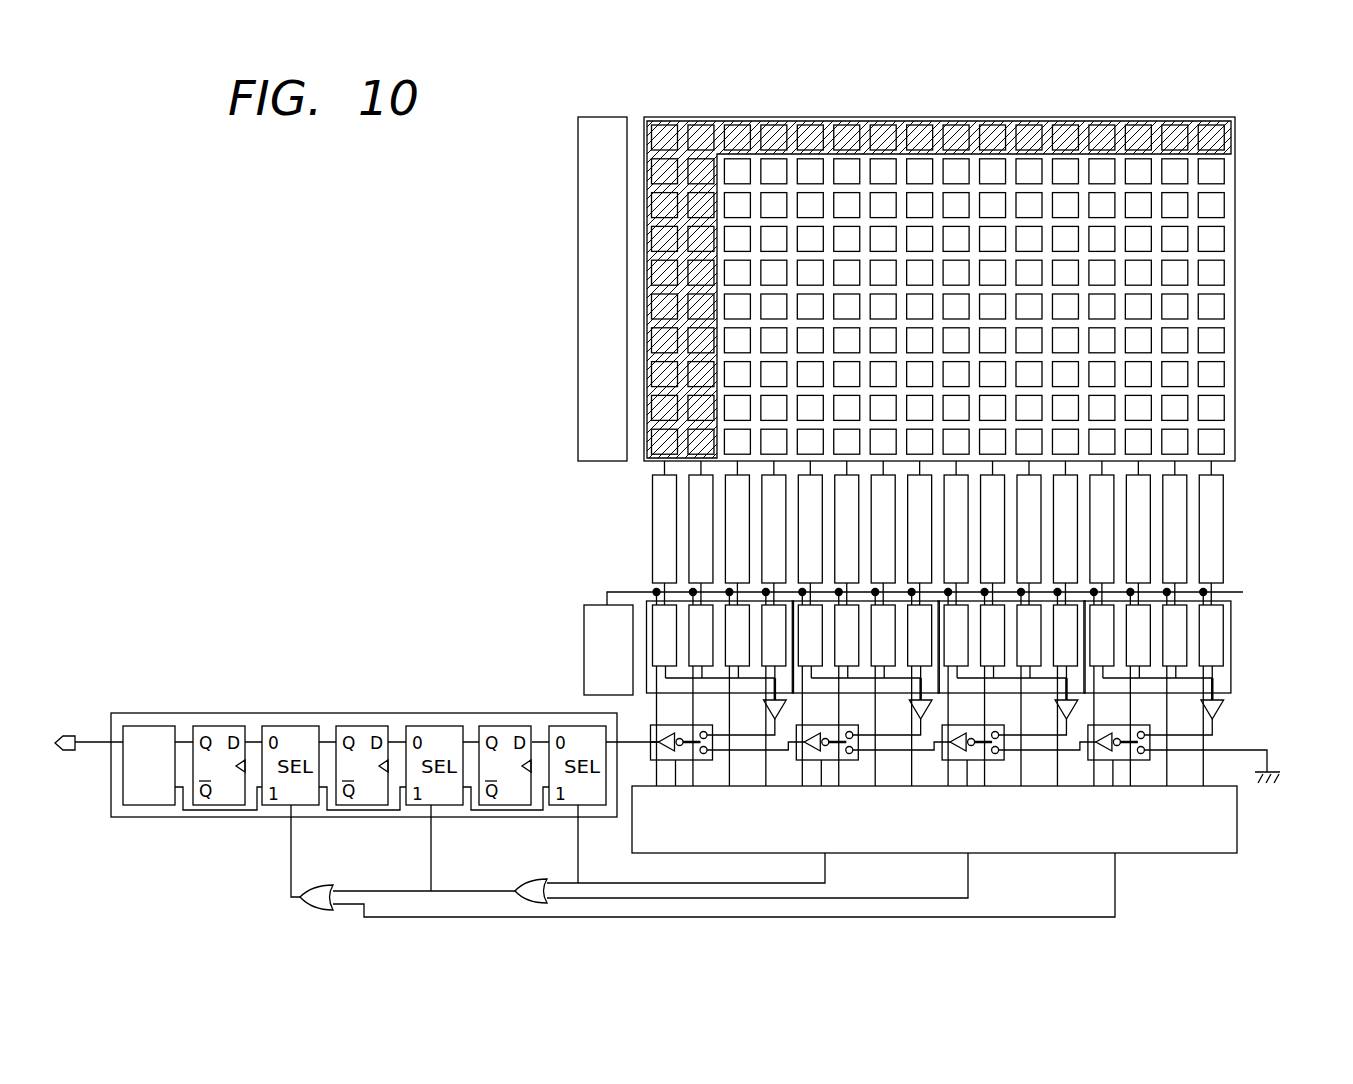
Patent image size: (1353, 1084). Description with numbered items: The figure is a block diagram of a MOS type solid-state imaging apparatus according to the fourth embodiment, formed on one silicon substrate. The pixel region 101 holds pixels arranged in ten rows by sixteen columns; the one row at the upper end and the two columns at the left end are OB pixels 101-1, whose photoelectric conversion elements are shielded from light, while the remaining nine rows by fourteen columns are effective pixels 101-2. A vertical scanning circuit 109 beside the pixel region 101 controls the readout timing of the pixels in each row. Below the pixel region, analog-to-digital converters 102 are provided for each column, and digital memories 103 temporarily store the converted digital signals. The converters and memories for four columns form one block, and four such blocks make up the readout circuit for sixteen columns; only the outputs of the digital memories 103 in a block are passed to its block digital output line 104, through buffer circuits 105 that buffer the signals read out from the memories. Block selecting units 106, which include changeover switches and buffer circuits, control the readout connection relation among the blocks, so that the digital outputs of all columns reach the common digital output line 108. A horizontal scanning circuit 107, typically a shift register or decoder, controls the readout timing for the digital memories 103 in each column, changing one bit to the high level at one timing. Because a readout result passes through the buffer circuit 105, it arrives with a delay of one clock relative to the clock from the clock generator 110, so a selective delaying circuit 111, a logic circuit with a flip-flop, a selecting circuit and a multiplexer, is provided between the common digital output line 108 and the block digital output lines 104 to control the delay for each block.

The pixel region 101 is at (991, 289).
The OB (optical black) pixels 101-1 is at (1235, 133).
The effective pixels 101-2 is at (1216, 290).
The analog-to-digital converters 102 is at (653, 501).
The digital memories 103 is at (660, 615).
The block digital output lines 104 is at (650, 638).
The buffer circuits 105 is at (770, 710).
The block selecting units 106 is at (680, 725).
The horizontal scanning circuit 107 is at (1175, 855).
The common digital output line 108 is at (70, 736).
The vertical scanning circuit 109 is at (578, 317).
The clock generator 110 is at (584, 618).
The selective delaying circuit 111 is at (233, 713).